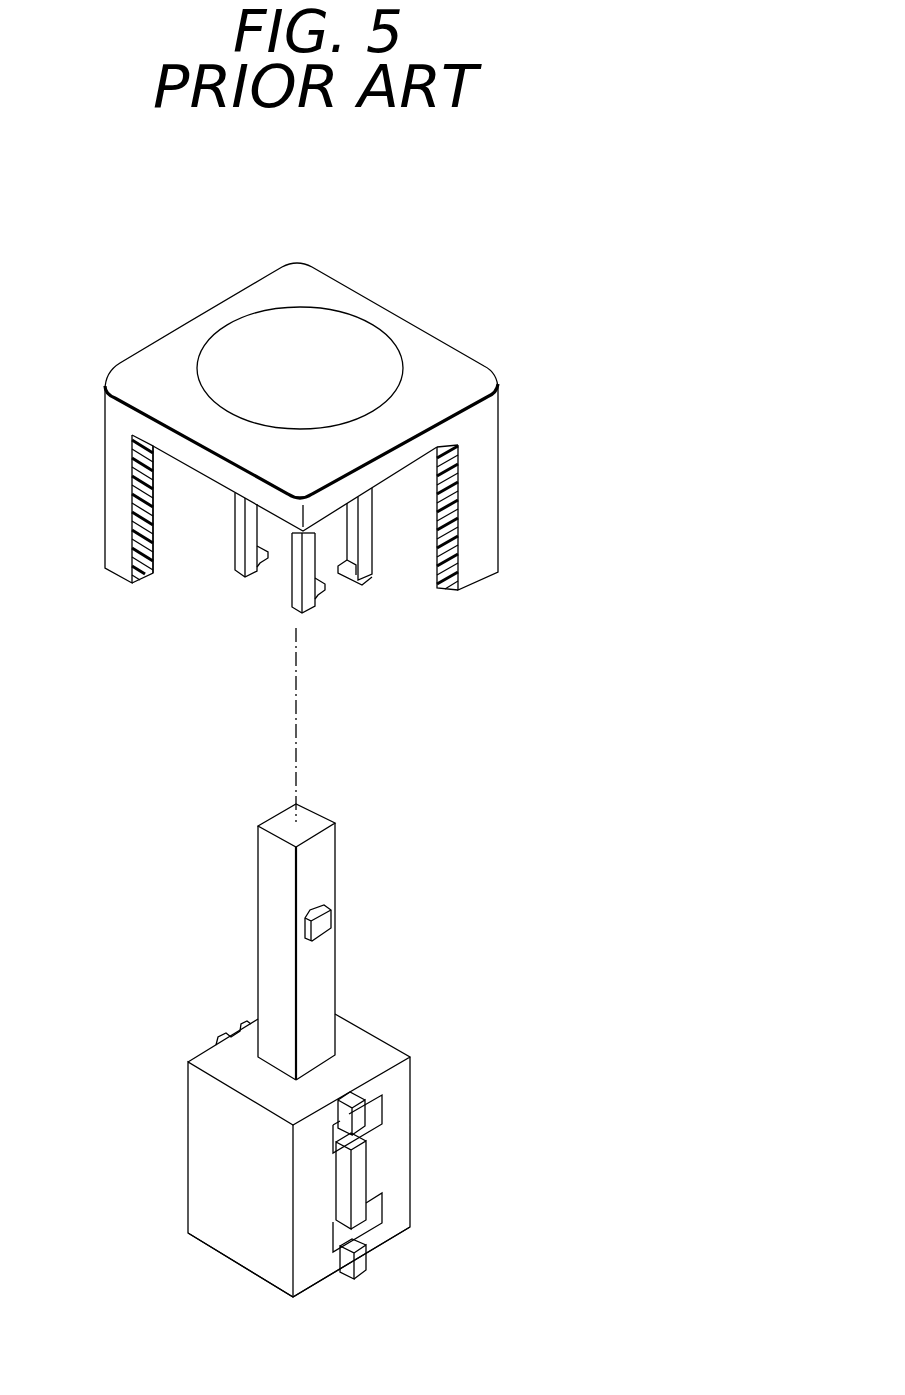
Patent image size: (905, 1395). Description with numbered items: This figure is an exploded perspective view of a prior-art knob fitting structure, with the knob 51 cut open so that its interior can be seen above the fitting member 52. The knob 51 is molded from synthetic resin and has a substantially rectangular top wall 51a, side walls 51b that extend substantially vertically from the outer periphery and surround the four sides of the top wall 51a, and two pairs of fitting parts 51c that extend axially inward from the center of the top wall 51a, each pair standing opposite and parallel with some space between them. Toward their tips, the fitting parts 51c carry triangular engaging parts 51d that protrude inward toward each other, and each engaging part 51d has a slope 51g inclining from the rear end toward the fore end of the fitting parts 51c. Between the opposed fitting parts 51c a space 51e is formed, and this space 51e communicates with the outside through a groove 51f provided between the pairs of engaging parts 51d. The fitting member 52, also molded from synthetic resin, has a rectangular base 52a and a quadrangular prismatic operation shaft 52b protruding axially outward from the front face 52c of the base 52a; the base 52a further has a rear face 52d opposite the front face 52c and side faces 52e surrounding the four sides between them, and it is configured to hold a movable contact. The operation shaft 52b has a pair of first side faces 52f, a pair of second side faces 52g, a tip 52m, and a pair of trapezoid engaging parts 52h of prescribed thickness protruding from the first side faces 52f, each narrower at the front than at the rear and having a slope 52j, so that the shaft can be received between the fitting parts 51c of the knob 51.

The knob 51 is at (517, 319).
The top wall 51a is at (250, 287).
The side walls 51b is at (492, 455).
The fitting parts 51c is at (237, 528).
The engaging parts 51d is at (265, 562).
The space 51e is at (325, 546).
The groove 51f is at (345, 583).
The slope 51g is at (322, 597).
The fitting member 52 is at (455, 998).
The base 52a is at (189, 1142).
The operation shaft 52b is at (336, 848).
The front face 52c is at (212, 1057).
The rear face 52d is at (310, 1289).
The side faces 52e is at (392, 1157).
The first side faces 52f is at (327, 877).
The second side faces 52g is at (267, 871).
The engaging parts 52h is at (323, 922).
The slope 52j is at (296, 932).
The tip 52m is at (313, 821).